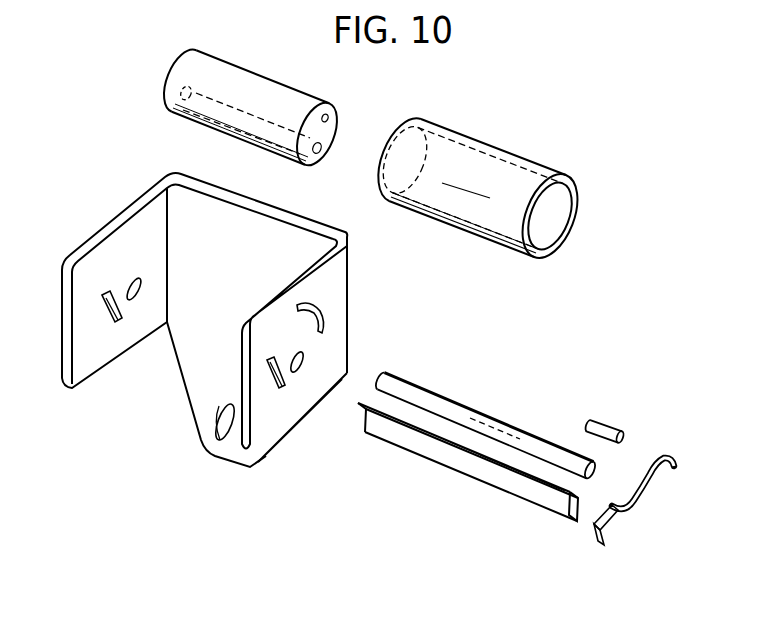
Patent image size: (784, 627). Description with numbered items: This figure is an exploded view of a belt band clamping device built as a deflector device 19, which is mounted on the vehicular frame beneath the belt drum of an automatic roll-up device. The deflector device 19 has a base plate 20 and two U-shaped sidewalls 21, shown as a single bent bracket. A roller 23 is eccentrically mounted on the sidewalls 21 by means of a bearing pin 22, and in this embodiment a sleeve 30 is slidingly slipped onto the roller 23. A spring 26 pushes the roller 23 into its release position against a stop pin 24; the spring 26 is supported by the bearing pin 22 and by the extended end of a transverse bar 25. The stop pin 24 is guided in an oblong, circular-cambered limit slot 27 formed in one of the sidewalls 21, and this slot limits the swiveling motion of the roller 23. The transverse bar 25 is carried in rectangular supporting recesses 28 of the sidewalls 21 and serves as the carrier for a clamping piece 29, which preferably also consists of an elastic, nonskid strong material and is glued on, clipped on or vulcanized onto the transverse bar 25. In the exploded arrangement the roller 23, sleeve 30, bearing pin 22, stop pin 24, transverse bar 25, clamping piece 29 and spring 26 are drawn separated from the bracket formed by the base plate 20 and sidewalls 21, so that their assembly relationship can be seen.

The deflector device 19 is at (204, 246).
The base plate 20 is at (187, 360).
The sidewalls 21 is at (90, 366).
The bearing pin 22 is at (478, 420).
The roller 23 is at (272, 95).
The stop pin 24 is at (608, 425).
The transverse bar 25 is at (477, 472).
The spring 26 is at (652, 477).
The limit slot 27 is at (323, 313).
The supporting recesses 28 is at (100, 303).
The clamping piece 29 is at (585, 506).
The sleeve 30 is at (520, 180).